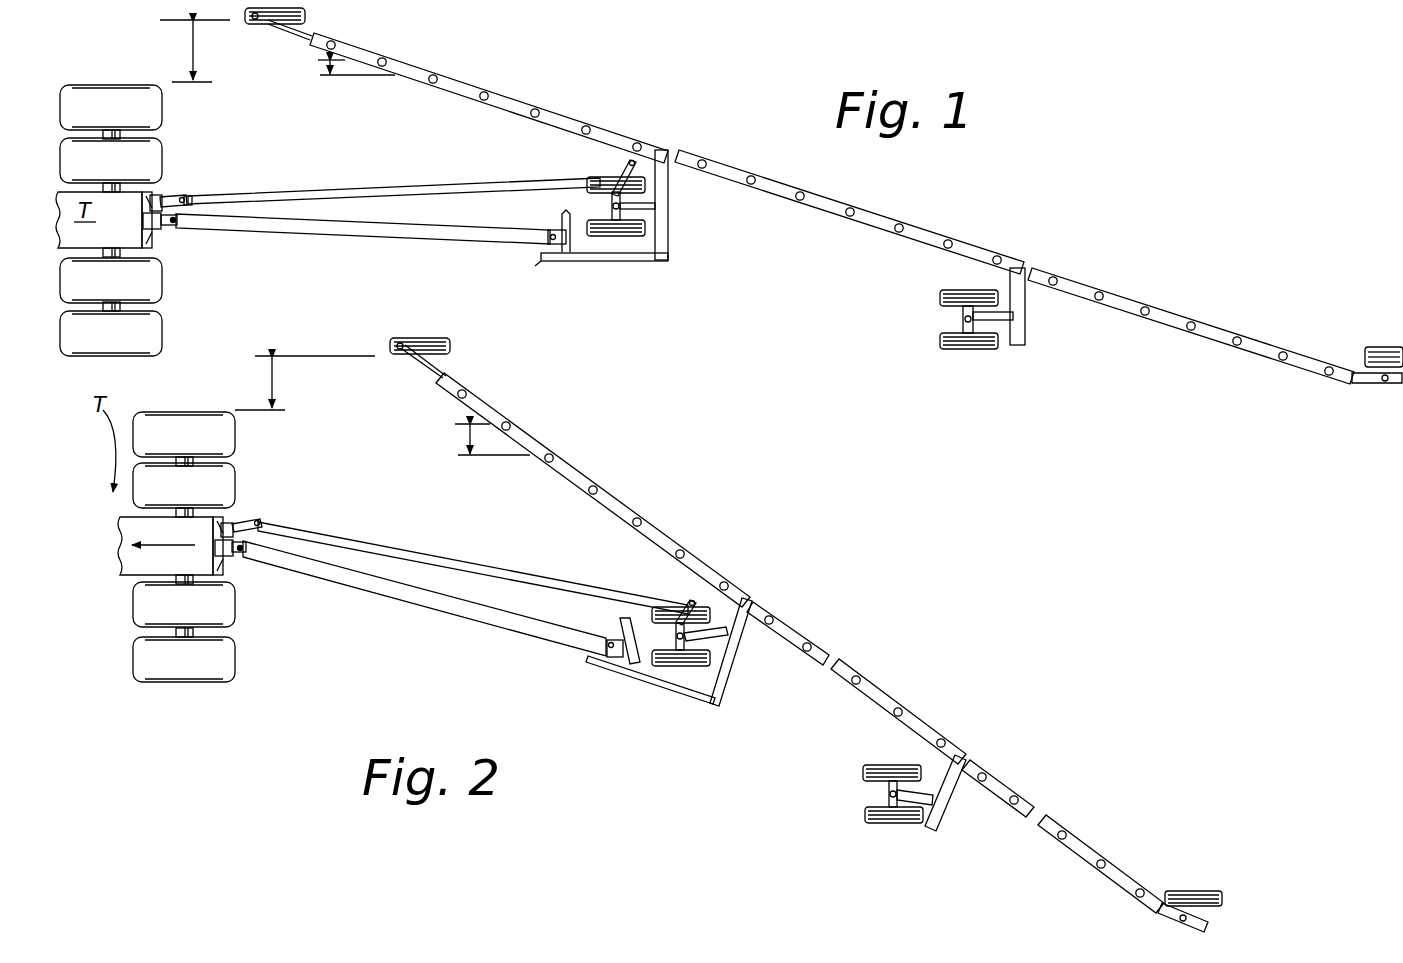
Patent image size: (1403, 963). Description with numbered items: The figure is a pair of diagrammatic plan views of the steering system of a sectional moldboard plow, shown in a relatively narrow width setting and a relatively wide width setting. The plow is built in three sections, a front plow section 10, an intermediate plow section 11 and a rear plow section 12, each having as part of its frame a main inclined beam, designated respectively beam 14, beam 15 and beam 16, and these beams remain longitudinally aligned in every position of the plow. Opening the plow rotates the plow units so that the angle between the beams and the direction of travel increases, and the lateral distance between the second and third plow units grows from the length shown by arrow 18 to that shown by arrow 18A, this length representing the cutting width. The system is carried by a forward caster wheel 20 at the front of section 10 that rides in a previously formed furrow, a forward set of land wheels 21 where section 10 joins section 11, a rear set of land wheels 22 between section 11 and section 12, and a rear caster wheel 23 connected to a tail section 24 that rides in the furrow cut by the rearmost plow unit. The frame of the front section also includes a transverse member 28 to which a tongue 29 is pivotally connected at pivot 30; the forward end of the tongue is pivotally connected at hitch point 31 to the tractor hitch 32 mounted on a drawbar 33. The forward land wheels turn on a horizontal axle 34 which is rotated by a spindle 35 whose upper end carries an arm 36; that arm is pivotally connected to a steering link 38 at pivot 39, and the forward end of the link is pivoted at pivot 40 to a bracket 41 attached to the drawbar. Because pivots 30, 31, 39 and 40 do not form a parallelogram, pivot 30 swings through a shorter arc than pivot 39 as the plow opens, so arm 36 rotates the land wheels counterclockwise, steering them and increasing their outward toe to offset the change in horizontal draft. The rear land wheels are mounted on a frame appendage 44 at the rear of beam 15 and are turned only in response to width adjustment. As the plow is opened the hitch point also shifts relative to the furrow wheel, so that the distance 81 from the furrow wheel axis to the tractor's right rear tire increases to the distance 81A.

In FIG. 1, the front plow section 10 is at (468, 140).
In FIG. 2, the front plow section 10 is at (644, 505).
In FIG. 1, the intermediate plow section 11 is at (849, 212).
In FIG. 2, the intermediate plow section 11 is at (922, 708).
In FIG. 1, the rear plow section 12 is at (1191, 316).
In FIG. 2, the rear plow section 12 is at (1067, 818).
In FIG. 1, the main inclined beam 14 is at (503, 92).
In FIG. 1, the main inclined beam 15 is at (818, 205).
In FIG. 1, the main inclined beam 16 is at (1110, 290).
In FIG. 1, the arrow 18 is at (330, 78).
In FIG. 2, the arrow 18A is at (468, 446).
In FIG. 1, the forward caster wheel 20 is at (305, 18).
In FIG. 2, the forward caster wheel 20 is at (450, 345).
In FIG. 1, the forward set of land wheels 21 is at (618, 200).
In FIG. 2, the forward set of land wheels 21 is at (680, 654).
In FIG. 1, the rear set of land wheels 22 is at (999, 356).
In FIG. 2, the rear set of land wheels 22 is at (885, 826).
In FIG. 1, the rear caster wheel 23 is at (1377, 330).
In FIG. 2, the rear caster wheel 23 is at (1190, 882).
In FIG. 1, the tail section 24 is at (1375, 388).
In FIG. 1, the transverse member 28 is at (575, 249).
In FIG. 1, the tongue 29 is at (400, 242).
In FIG. 1, the pivotal connection 30 is at (550, 228).
In FIG. 2, the pivotal connection 30 is at (612, 640).
In FIG. 1, the pivotal connection 31 is at (178, 222).
In FIG. 2, the pivotal connection 31 is at (243, 550).
In FIG. 1, the tractor hitch 32 is at (158, 232).
In FIG. 1, the drawbar 33 is at (160, 196).
In FIG. 1, the horizontal axle 34 is at (612, 206).
In FIG. 1, the spindle 35 is at (627, 207).
In FIG. 1, the arm 36 is at (656, 204).
In FIG. 1, the steering link 38 is at (413, 194).
In FIG. 1, the pivotal connection 39 is at (614, 172).
In FIG. 2, the pivotal connection 39 is at (692, 601).
In FIG. 1, the pivotal connection 40 is at (188, 198).
In FIG. 2, the pivotal connection 40 is at (254, 518).
In FIG. 1, the bracket 41 is at (180, 197).
In FIG. 1, the frame appendage 44 is at (1026, 328).
In FIG. 1, the distance 81 is at (195, 55).
In FIG. 2, the distance 81A is at (276, 385).